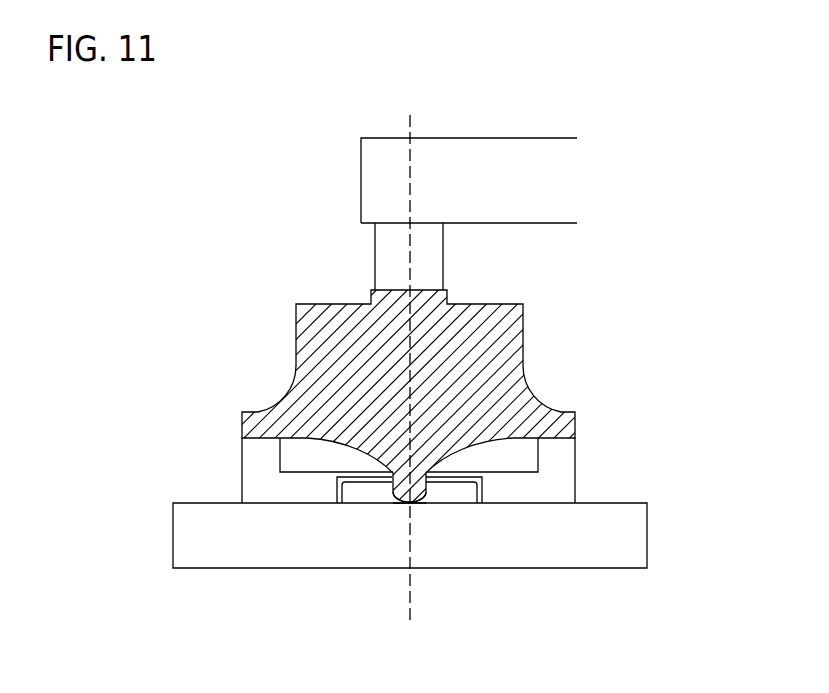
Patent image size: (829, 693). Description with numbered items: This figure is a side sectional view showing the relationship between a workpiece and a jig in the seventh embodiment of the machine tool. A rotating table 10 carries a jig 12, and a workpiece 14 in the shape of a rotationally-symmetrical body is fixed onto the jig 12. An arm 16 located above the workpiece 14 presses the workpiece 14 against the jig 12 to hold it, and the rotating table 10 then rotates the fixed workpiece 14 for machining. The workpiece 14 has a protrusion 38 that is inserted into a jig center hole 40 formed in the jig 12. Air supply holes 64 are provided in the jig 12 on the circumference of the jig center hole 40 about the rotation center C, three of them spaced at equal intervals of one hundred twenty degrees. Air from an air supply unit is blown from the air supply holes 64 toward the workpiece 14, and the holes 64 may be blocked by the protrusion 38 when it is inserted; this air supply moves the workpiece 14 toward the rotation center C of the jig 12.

The rotating table 10 is at (632, 537).
The jig 12 is at (557, 488).
The workpiece 14 is at (312, 338).
The arm 16 is at (473, 137).
The protrusion 38 is at (428, 490).
The jig center hole 40 is at (392, 504).
The air supply holes 64 is at (335, 483).
The rotation center C is at (410, 257).